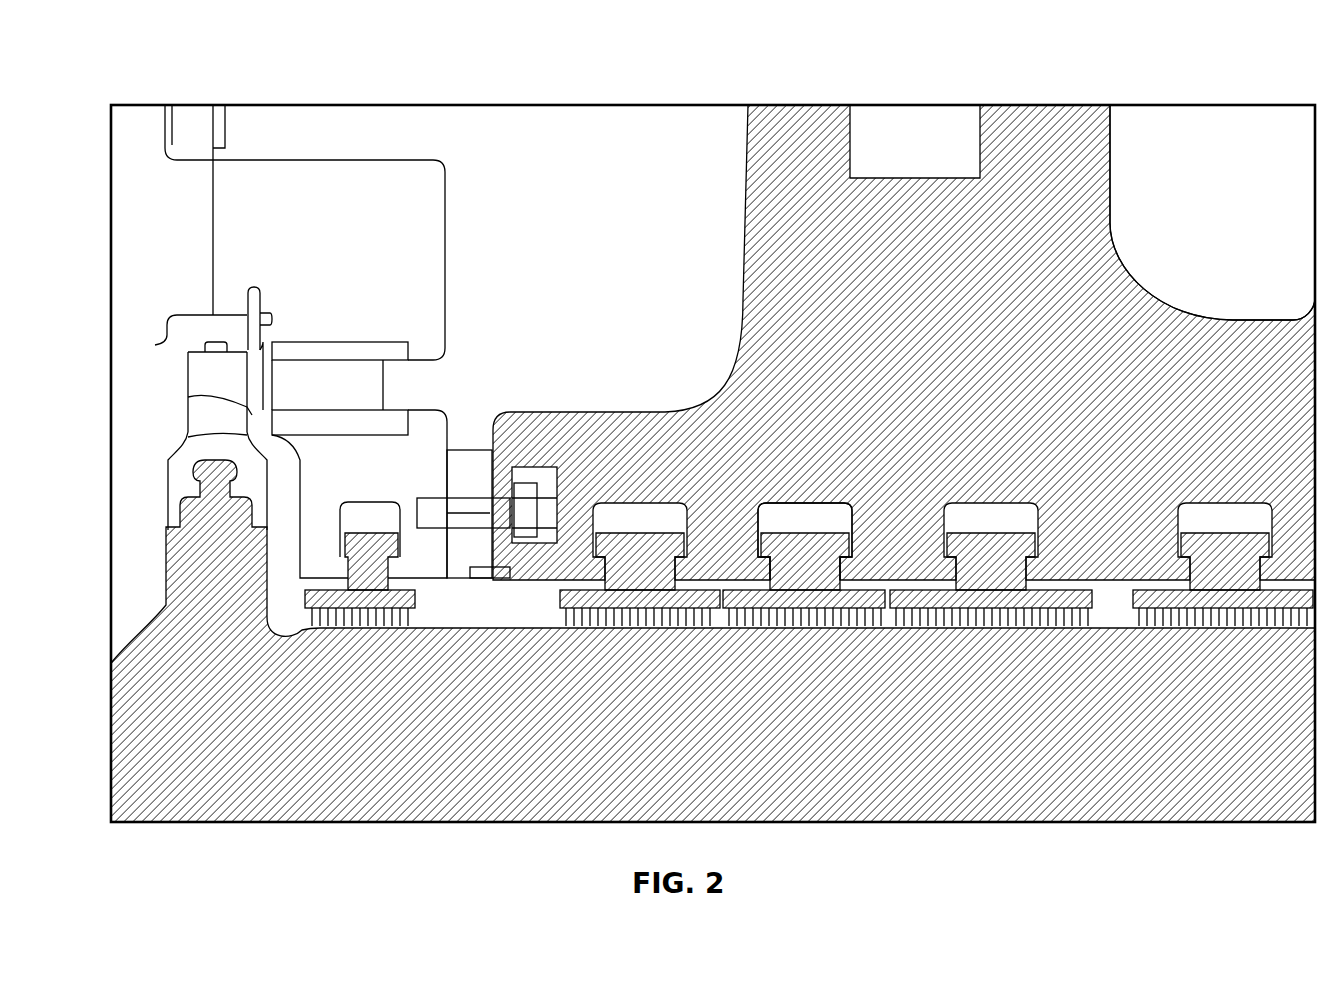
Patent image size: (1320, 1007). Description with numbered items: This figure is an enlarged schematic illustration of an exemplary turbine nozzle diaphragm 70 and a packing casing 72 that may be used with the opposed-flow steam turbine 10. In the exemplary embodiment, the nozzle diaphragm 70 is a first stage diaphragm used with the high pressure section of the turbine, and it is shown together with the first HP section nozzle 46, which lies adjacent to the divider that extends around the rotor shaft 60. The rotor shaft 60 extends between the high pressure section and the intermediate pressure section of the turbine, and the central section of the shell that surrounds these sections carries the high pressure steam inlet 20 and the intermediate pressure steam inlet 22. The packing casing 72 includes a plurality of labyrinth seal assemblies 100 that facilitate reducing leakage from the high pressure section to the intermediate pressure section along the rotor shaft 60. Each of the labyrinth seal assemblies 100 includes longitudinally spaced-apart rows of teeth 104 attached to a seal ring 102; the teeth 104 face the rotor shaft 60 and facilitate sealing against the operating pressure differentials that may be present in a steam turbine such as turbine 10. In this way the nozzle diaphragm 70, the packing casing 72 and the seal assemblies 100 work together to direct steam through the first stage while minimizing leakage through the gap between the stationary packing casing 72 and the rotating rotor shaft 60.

The opposed-flow steam turbine 10 is at (186, 54).
The high pressure steam inlet 20 is at (570, 124).
The intermediate pressure steam inlet 22 is at (1206, 126).
The first HP section nozzle 46 is at (367, 378).
The rotor shaft 60 is at (709, 739).
The turbine nozzle diaphragm 70 is at (349, 484).
The packing casing 72 is at (996, 336).
The labyrinth seal assemblies 100 is at (810, 503).
The seal ring 102 is at (792, 558).
The teeth 104 is at (857, 613).